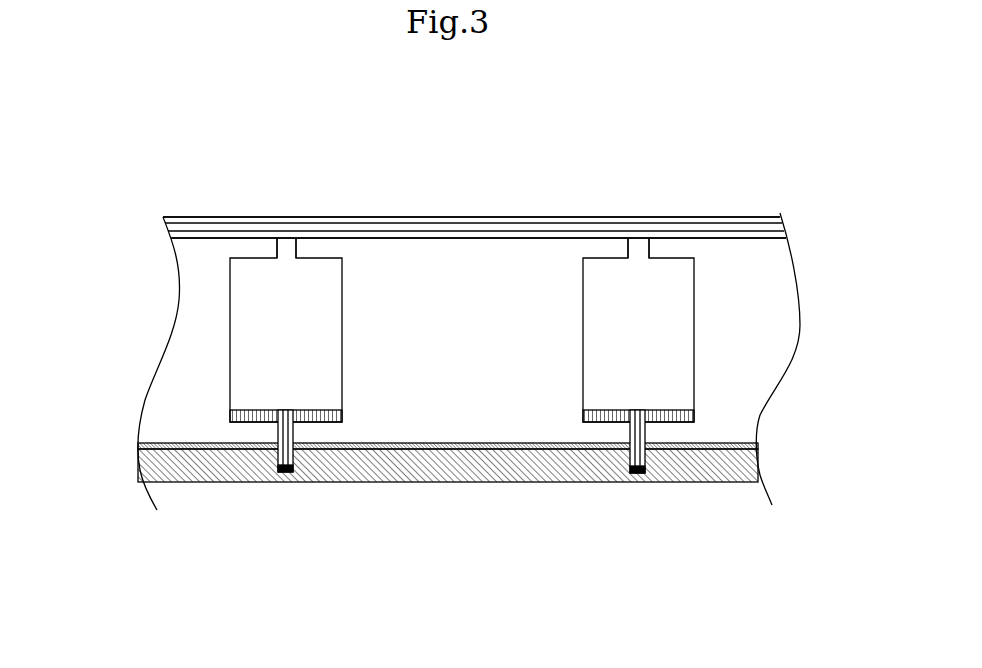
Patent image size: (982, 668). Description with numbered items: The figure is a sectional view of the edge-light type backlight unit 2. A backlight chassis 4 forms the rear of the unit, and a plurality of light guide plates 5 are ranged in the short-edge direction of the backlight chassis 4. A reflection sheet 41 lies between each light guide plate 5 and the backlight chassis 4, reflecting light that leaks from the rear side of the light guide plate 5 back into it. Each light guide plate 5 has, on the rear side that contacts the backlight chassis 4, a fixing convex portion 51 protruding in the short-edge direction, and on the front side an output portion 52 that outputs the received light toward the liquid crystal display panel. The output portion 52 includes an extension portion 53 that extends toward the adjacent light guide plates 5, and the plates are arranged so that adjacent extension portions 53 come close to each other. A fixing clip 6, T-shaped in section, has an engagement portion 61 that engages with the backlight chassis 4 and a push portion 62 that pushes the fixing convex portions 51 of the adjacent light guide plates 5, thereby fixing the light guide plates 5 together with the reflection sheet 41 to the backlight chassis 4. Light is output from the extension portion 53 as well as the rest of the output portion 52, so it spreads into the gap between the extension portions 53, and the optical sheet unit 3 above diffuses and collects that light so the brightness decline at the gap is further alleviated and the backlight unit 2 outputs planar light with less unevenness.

The backlight unit 2 is at (168, 166).
The optical sheet unit 3 is at (165, 222).
The backlight chassis 4 is at (163, 466).
The reflection sheet 41 is at (155, 447).
The light guide plate 5 is at (190, 318).
The fixing convex portion 51 is at (250, 433).
The output portion 52 is at (198, 237).
The extension portion 53 is at (247, 247).
The fixing clip 6 is at (283, 410).
The engagement portion 61 is at (283, 472).
The push portion 62 is at (232, 405).